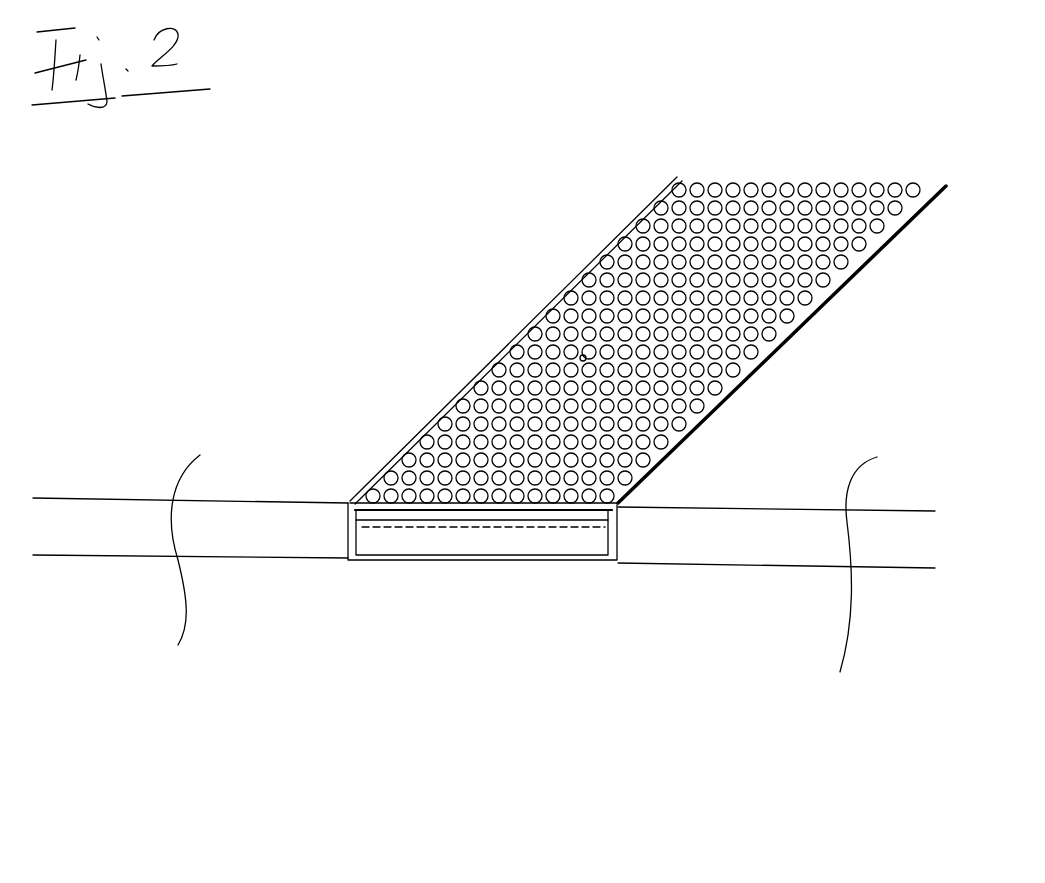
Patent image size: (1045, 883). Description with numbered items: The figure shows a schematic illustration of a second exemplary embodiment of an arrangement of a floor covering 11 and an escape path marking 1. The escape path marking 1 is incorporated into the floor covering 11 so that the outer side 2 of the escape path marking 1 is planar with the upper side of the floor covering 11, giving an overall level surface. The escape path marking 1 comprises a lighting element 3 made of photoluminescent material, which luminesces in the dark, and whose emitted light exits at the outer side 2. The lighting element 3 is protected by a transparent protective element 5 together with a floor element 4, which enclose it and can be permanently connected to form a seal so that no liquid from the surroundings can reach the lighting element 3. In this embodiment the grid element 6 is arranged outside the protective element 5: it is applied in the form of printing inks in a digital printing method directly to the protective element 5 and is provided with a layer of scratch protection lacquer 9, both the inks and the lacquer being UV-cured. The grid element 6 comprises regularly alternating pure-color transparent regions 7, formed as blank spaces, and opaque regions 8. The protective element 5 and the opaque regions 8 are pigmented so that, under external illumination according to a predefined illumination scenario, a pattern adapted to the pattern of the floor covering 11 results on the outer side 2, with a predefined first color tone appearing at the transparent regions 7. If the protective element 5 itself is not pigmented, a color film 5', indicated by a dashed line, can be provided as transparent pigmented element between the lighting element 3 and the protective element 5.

The escape path marking 1 is at (260, 712).
The outer side 2 is at (485, 370).
The lighting element 3 is at (477, 538).
The floor element 4 is at (593, 562).
The protective element 5 is at (482, 613).
The color film 5' is at (483, 607).
The grid element 6 is at (422, 512).
The transparent regions 7 is at (580, 337).
The opaque regions 8 is at (583, 358).
The scratch protection lacquer 9 is at (357, 488).
The floor covering 11 is at (851, 726).